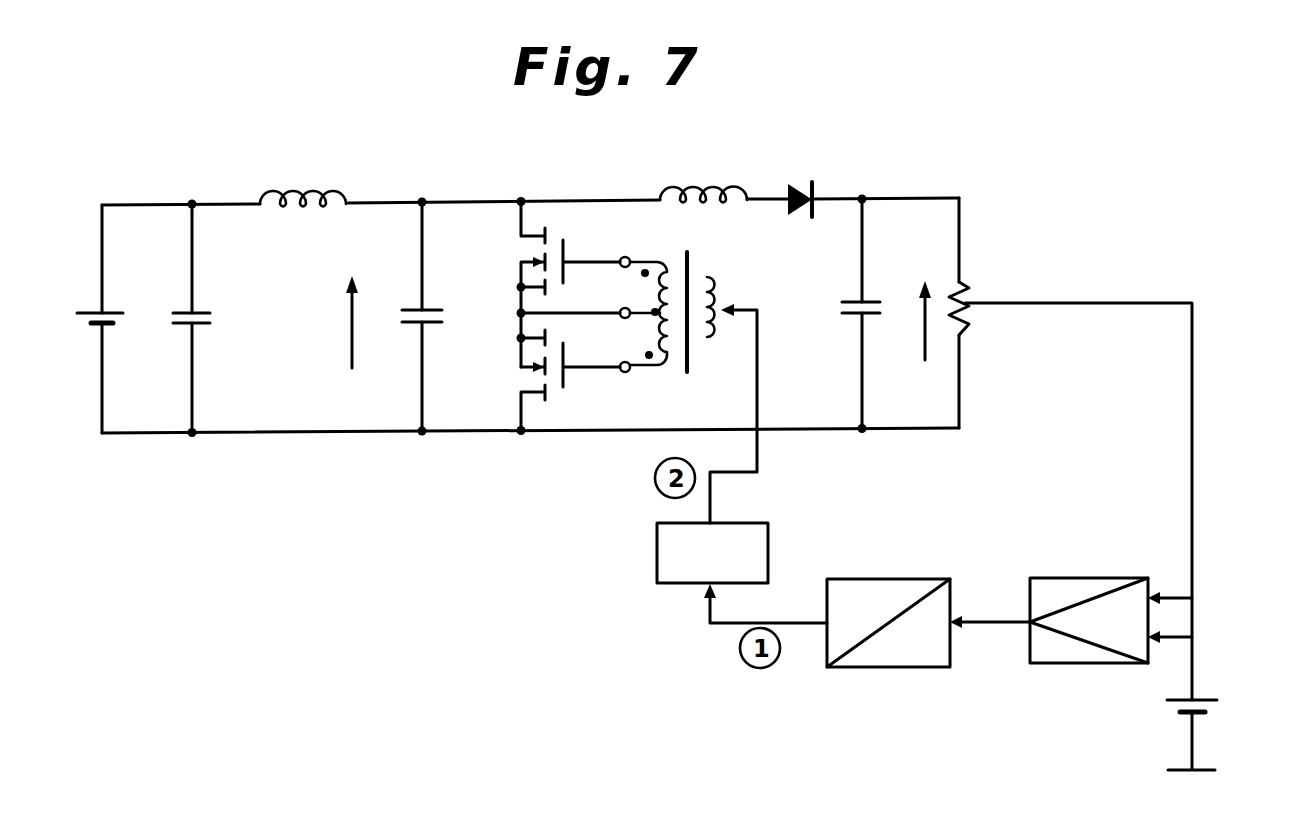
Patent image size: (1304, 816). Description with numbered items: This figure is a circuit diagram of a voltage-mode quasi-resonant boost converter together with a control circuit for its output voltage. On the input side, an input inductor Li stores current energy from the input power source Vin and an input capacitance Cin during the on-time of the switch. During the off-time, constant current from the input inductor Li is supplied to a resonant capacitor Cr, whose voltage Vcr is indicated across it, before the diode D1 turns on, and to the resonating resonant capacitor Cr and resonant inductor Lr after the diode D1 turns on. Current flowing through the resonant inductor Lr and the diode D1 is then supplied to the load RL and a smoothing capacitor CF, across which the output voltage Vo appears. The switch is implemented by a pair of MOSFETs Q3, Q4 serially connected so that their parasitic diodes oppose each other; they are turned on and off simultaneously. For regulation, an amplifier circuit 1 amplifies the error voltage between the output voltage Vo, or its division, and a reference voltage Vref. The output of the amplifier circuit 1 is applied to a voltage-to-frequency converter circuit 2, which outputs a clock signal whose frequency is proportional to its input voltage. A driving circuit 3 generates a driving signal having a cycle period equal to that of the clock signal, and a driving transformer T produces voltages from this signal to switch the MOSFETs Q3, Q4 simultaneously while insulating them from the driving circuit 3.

The input power source Vin is at (85, 320).
The input capacitance Cin is at (211, 317).
The input inductor Li is at (304, 192).
The resonant capacitor Cr is at (398, 313).
The resonant capacitor voltage Vcr is at (335, 322).
The MOSFET Q3 is at (566, 250).
The MOSFET Q4 is at (566, 380).
The driving transformer T is at (686, 228).
The resonant inductor Lr is at (699, 194).
The diode D1 is at (800, 187).
The smoothing capacitor CF is at (842, 309).
The output voltage Vo is at (910, 320).
The load RL is at (972, 326).
The amplifier circuit 1 is at (1077, 578).
The voltage to frequency converter circuit 2 is at (895, 579).
The driving circuit 3 is at (657, 555).
The reference voltage Vref is at (1212, 710).